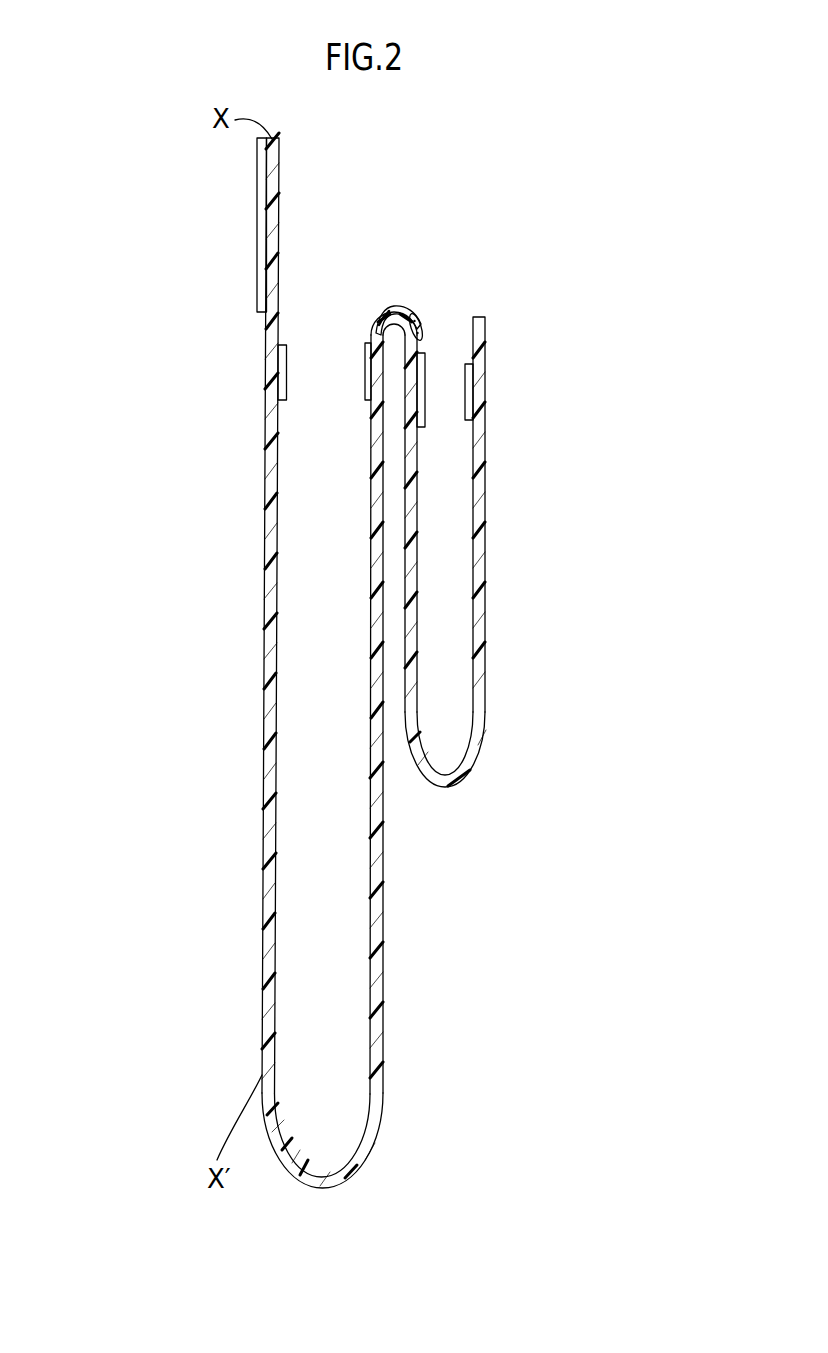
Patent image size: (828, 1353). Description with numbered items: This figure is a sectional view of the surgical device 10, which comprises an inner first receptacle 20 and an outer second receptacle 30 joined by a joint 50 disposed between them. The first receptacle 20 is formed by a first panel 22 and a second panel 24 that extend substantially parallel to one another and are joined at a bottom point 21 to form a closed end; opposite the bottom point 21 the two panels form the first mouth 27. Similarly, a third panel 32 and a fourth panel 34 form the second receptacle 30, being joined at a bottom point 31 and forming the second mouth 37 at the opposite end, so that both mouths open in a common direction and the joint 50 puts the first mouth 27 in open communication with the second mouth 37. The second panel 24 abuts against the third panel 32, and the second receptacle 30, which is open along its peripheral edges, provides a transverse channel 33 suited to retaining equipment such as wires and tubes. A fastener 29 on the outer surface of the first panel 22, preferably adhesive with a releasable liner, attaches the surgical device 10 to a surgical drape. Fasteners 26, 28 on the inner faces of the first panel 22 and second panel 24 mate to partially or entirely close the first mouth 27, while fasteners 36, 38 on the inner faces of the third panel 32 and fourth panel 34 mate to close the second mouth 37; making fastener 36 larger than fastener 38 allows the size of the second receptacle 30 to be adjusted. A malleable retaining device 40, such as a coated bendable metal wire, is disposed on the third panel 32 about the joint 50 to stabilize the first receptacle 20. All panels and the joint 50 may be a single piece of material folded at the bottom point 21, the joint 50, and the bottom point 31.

The surgical device 10 is at (158, 196).
The first receptacle 20 is at (377, 1113).
The bottom point 21 is at (322, 1188).
The first panel 22 is at (268, 885).
The second panel 24 is at (375, 928).
The fastener 26 is at (283, 368).
The first mouth 27 is at (318, 353).
The fastener 28 is at (368, 368).
The fastener 29 is at (257, 257).
The second receptacle 30 is at (483, 722).
The bottom point 31 is at (443, 787).
The third panel 32 is at (413, 557).
The channel 33 is at (445, 595).
The fourth panel 34 is at (480, 628).
The fastener 36 is at (423, 412).
The second mouth 37 is at (448, 348).
The fastener 38 is at (472, 388).
The retaining device 40 is at (418, 318).
The joint 50 is at (397, 312).